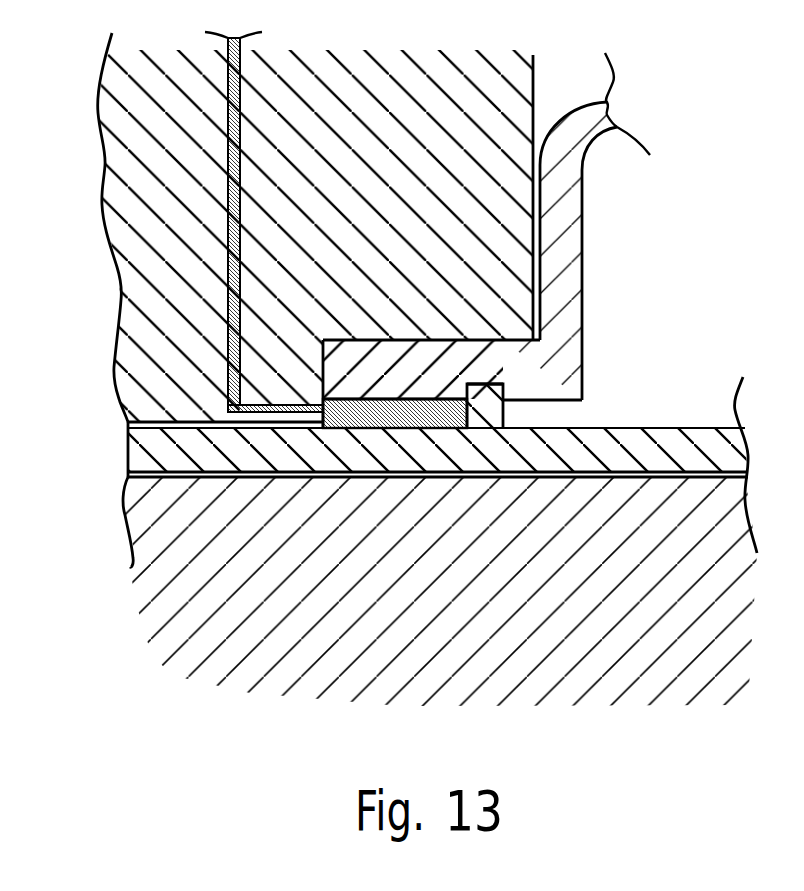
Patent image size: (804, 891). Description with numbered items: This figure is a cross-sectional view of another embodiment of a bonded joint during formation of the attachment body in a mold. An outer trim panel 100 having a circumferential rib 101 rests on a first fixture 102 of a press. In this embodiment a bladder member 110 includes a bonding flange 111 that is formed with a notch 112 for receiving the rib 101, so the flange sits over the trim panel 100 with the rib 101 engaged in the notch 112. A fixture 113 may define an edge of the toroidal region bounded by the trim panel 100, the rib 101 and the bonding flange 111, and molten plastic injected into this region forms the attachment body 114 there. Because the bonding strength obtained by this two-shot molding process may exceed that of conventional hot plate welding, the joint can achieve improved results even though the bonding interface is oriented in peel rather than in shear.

The outer trim panel 100 is at (703, 428).
The circumferential rib 101 is at (492, 410).
The first fixture 102 is at (152, 588).
The bladder member 110 is at (583, 204).
The bonding flange 111 is at (428, 363).
The notch 112 is at (480, 384).
The fixture 113 is at (127, 163).
The attachment body 114 is at (380, 417).